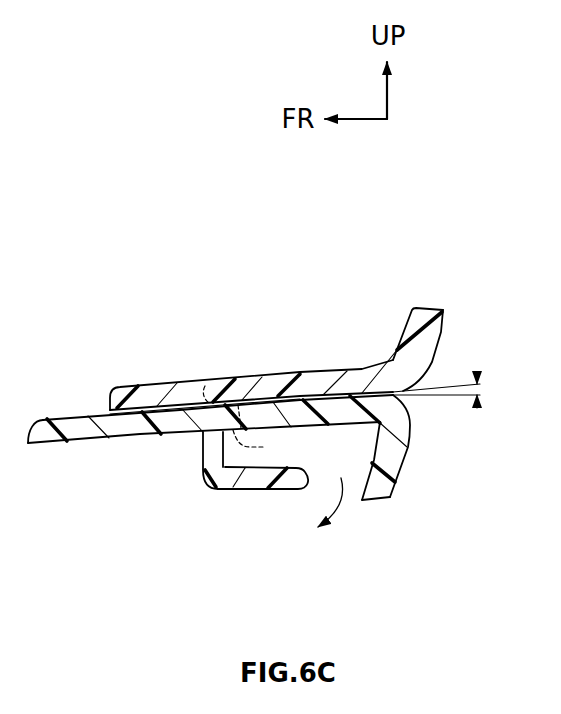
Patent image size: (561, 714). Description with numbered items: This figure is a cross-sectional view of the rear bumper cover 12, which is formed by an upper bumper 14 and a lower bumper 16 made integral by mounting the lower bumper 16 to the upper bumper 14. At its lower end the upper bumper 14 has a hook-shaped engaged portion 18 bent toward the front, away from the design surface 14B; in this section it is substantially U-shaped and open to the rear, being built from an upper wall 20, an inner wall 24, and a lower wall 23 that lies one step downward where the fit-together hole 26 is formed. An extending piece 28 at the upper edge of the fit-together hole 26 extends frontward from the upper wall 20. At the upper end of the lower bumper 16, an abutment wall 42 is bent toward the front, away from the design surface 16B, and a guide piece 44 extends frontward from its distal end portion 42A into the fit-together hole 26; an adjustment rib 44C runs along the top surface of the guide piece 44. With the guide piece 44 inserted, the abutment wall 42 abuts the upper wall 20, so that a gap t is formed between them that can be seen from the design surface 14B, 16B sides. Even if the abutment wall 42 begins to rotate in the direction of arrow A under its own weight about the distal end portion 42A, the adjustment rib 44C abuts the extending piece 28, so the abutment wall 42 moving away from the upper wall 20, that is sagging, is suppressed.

The rear bumper cover 12 is at (390, 242).
The upper bumper 14 is at (450, 312).
The design surface 14B is at (437, 342).
The lower bumper 16 is at (416, 462).
The design surface 16B is at (398, 497).
The engaged portion 18 is at (218, 503).
The upper wall 20 is at (317, 384).
The lower wall 23 is at (254, 483).
The inner wall 24 is at (205, 444).
The fit-together hole 26 is at (210, 455).
The extending piece 28 is at (153, 394).
The abutment wall 42 is at (345, 414).
The distal end portion 42A is at (273, 448).
The guide piece 44 is at (68, 444).
The adjustment rib 44C is at (183, 411).
The gap t is at (480, 390).
The arrow A is at (341, 500).